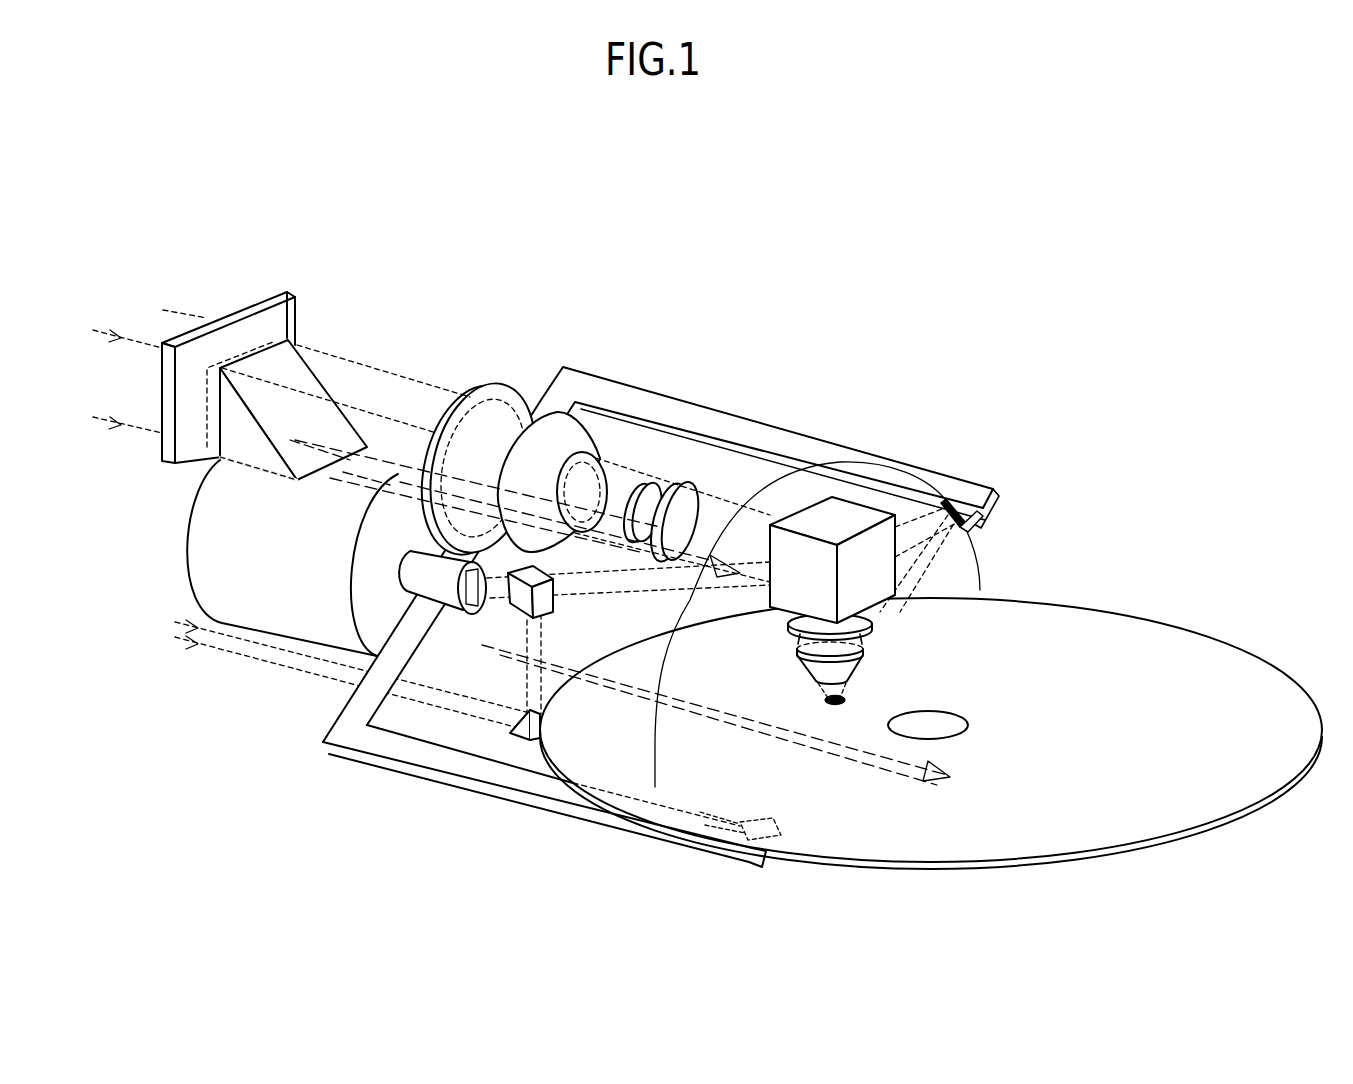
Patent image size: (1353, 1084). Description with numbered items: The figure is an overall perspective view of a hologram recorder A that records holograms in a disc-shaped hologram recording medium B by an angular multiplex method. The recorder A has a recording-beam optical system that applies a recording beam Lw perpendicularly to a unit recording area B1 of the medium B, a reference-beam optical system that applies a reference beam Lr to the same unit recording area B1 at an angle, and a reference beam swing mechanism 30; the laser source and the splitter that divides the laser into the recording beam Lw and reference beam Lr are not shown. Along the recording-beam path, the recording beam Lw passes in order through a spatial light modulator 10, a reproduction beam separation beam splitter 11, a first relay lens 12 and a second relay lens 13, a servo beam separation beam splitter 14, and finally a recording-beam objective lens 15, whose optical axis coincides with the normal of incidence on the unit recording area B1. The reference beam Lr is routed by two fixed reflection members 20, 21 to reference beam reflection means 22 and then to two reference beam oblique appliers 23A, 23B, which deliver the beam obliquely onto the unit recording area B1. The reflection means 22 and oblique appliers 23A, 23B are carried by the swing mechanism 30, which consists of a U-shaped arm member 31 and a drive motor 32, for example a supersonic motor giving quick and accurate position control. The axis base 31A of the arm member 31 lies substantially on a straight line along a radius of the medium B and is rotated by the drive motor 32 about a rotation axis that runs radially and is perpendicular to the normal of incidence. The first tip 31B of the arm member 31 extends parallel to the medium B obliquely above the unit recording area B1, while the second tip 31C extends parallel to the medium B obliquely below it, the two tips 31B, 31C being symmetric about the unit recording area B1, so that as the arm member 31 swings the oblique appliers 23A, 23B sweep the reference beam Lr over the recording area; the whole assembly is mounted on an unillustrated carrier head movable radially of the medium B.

The hologram recorder A is at (747, 256).
The hologram recording medium B is at (1222, 650).
The unit recording area B1 is at (848, 700).
The recording beam Lw is at (160, 309).
The reference beam Lr is at (186, 618).
The spatial light modulator 10 is at (272, 296).
The reproduction beam separation beam splitter 11 is at (296, 379).
The first relay lens 12 is at (557, 431).
The second relay lens 13 is at (652, 483).
The servo beam separation beam splitter 14 is at (843, 516).
The recording-beam objective lens 15 is at (870, 642).
The fixed reflection member 20 is at (520, 736).
The fixed reflection member 21 is at (511, 600).
The reference beam reflection means 22 is at (463, 613).
The reference beam oblique applier 23A is at (948, 500).
The reference beam oblique applier 23B is at (803, 836).
The reference beam swing mechanism 30 is at (656, 660).
The arm member 31 is at (687, 660).
The axis base 31A is at (364, 592).
The first tip 31B is at (1005, 492).
The second tip 31C is at (742, 864).
The drive motor 32 is at (258, 602).